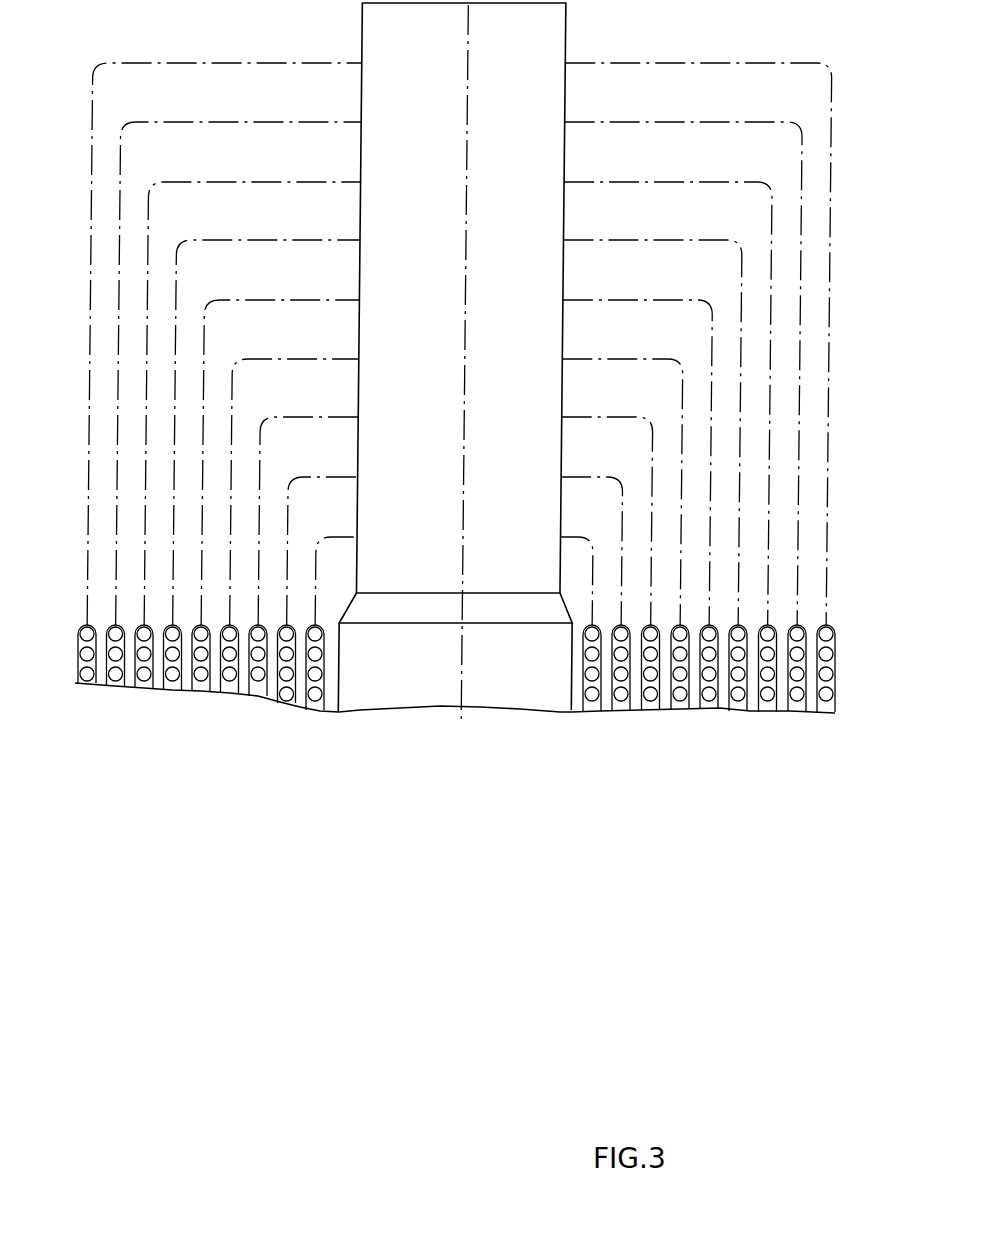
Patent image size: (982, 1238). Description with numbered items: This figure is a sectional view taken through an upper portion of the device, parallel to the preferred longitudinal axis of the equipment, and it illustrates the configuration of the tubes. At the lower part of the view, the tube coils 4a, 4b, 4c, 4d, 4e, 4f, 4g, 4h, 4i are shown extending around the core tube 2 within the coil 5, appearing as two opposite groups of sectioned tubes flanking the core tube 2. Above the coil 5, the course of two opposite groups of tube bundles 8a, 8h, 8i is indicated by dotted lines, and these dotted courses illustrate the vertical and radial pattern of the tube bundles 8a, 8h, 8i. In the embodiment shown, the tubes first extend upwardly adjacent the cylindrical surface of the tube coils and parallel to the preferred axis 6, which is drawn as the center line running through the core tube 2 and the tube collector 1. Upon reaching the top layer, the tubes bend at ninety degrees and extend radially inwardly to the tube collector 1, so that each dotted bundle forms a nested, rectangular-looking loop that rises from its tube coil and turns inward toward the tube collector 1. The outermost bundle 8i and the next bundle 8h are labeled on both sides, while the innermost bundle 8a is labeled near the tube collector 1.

The tube collector 1 is at (523, 301).
The core tube 2 is at (527, 686).
The tube coil 4a is at (572, 725).
The tube coil 4b is at (286, 722).
The tube coil 4c is at (258, 719).
The tube coil 4d is at (230, 718).
The tube coil 4e is at (201, 718).
The tube coil 4f is at (172, 717).
The tube coil 4g is at (144, 715).
The tube coil 4h is at (116, 713).
The tube coil 4i is at (816, 727).
The coil 5 is at (695, 688).
The preferred axis 6 is at (466, 76).
The tube bundle 8a is at (586, 533).
The tube bundle 8h is at (118, 258).
The tube bundle 8i is at (93, 202).